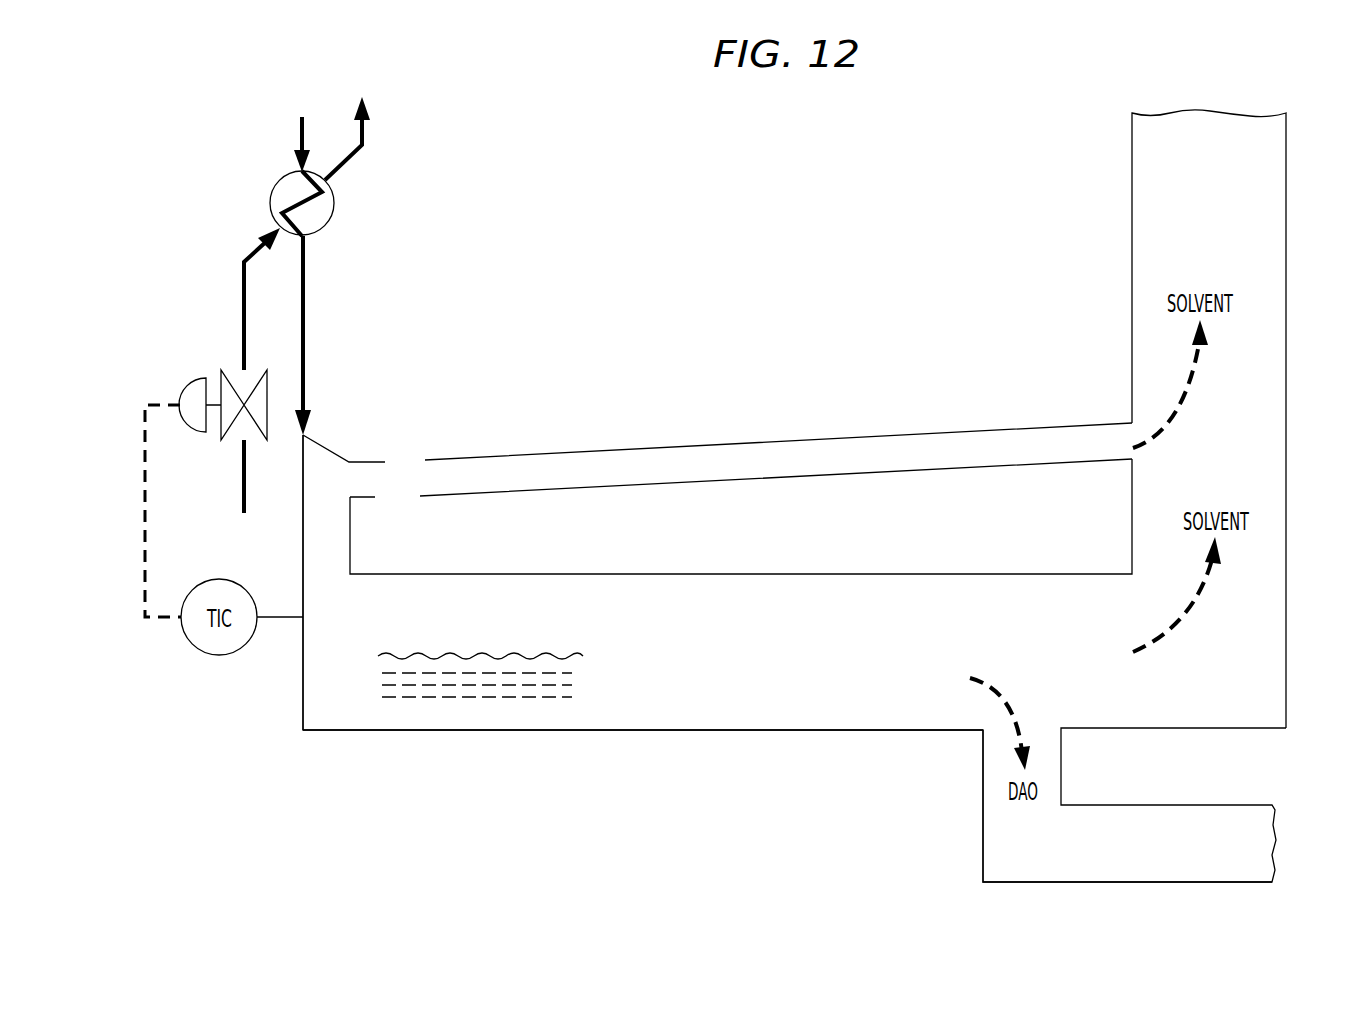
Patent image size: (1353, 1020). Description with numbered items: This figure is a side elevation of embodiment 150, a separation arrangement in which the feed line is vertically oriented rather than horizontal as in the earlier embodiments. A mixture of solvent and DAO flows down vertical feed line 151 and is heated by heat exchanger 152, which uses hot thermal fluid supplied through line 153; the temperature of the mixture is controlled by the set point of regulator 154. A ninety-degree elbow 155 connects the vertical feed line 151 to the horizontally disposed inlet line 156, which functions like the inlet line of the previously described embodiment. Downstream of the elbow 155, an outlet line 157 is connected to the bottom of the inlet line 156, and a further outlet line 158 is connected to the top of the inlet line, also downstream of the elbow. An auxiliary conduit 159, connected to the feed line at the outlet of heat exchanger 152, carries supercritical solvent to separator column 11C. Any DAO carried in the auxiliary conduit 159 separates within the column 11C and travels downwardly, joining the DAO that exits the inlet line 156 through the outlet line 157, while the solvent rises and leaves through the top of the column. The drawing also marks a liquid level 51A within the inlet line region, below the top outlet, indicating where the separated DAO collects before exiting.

The embodiment 150 is at (538, 363).
The feed line 151 is at (305, 265).
The heat exchanger 152 is at (334, 203).
The line 153 is at (244, 320).
The regulator 154 is at (186, 378).
The 90° elbow 155 is at (303, 695).
The inlet line 156 is at (530, 733).
The outlet line 157 is at (983, 812).
The further outlet line 158 is at (1133, 593).
The auxiliary conduit 159 is at (766, 437).
The liquid level 51A is at (495, 655).
The separator column 11C is at (1286, 430).